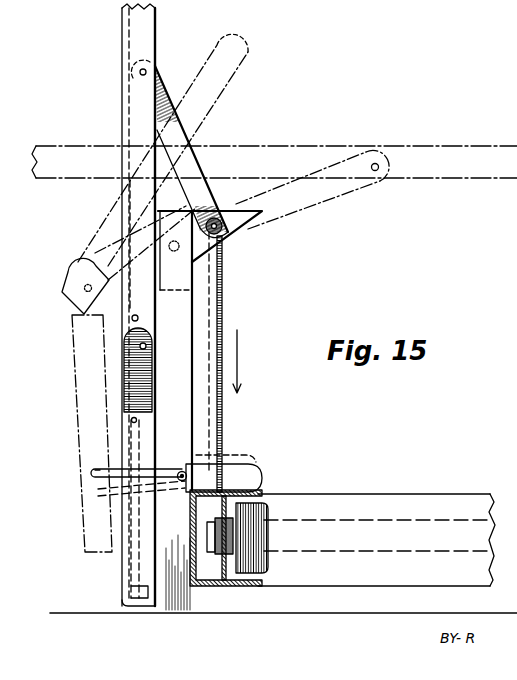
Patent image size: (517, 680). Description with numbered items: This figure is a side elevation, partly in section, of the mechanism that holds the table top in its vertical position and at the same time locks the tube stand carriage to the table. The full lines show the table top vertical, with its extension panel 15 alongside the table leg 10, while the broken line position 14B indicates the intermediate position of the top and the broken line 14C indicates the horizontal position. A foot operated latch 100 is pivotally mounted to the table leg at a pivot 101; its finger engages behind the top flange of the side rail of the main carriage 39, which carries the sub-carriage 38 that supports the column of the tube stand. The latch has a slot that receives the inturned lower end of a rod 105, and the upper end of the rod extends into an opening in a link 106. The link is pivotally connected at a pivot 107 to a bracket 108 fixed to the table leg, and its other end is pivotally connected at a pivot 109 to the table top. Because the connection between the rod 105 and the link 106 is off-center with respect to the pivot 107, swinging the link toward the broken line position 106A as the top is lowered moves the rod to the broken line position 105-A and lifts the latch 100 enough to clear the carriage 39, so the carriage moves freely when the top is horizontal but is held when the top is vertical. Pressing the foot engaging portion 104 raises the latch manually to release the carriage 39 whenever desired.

The table leg 10 is at (190, 600).
The extension panel 15 is at (122, 578).
The sub-carriage 38 is at (262, 578).
The main carriage 39 is at (270, 493).
The foot operated latch 100 is at (256, 462).
The pivot 101 is at (188, 471).
The foot engaging portion 104 is at (93, 470).
The rod 105 is at (224, 276).
The broken line position of rod 105-A is at (224, 306).
The link 106 is at (202, 122).
The broken line position of link 106A is at (333, 199).
The pivot 107 is at (227, 210).
The bracket 108 is at (246, 222).
The pivot 109 is at (152, 68).
The broken line position of table top 14B is at (230, 82).
The broken line position of table top 14C is at (408, 150).